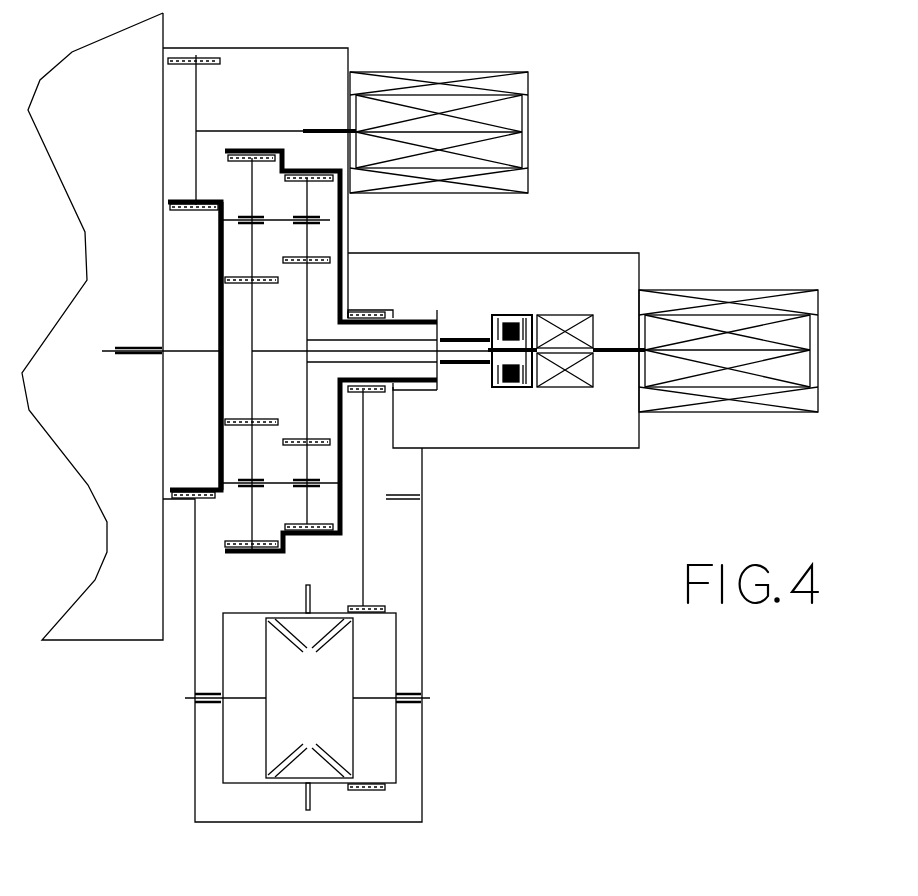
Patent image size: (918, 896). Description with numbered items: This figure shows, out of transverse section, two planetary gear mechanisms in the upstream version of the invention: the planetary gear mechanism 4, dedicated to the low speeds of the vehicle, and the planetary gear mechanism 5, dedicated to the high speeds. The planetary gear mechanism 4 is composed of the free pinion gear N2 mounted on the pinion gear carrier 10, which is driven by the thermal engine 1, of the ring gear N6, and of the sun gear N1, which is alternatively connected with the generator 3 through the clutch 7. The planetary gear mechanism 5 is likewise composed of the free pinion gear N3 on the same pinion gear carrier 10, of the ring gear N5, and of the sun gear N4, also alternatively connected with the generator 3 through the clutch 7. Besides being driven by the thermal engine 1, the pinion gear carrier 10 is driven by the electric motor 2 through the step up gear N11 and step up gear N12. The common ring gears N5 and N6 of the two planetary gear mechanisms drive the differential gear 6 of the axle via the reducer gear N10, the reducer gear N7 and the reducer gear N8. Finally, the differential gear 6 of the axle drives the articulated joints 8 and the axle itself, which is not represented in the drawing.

The thermal engine 1 is at (110, 641).
The electric motor 2 is at (497, 193).
The generator 3 is at (678, 290).
The planetary gear mechanism (λ) 4 is at (250, 468).
The planetary gear mechanism (μ) 5 is at (307, 460).
The differential gear 6 is at (397, 640).
The clutch 7 is at (493, 387).
The articulated joints 8 is at (428, 698).
The pinion gear carrier 10 is at (216, 404).
The sun gear N1 is at (254, 288).
The free pinion gear N2 is at (272, 354).
The free pinion gear N3 is at (297, 351).
The sun gear N4 is at (308, 268).
The ring gear N5 is at (296, 174).
The ring gear N6 is at (320, 234).
The reducer gear N7 is at (369, 501).
The reducer gear N8 is at (369, 697).
The reducer gear N10 is at (331, 431).
The step up gear N11 is at (190, 350).
The step up gear N12 is at (189, 198).